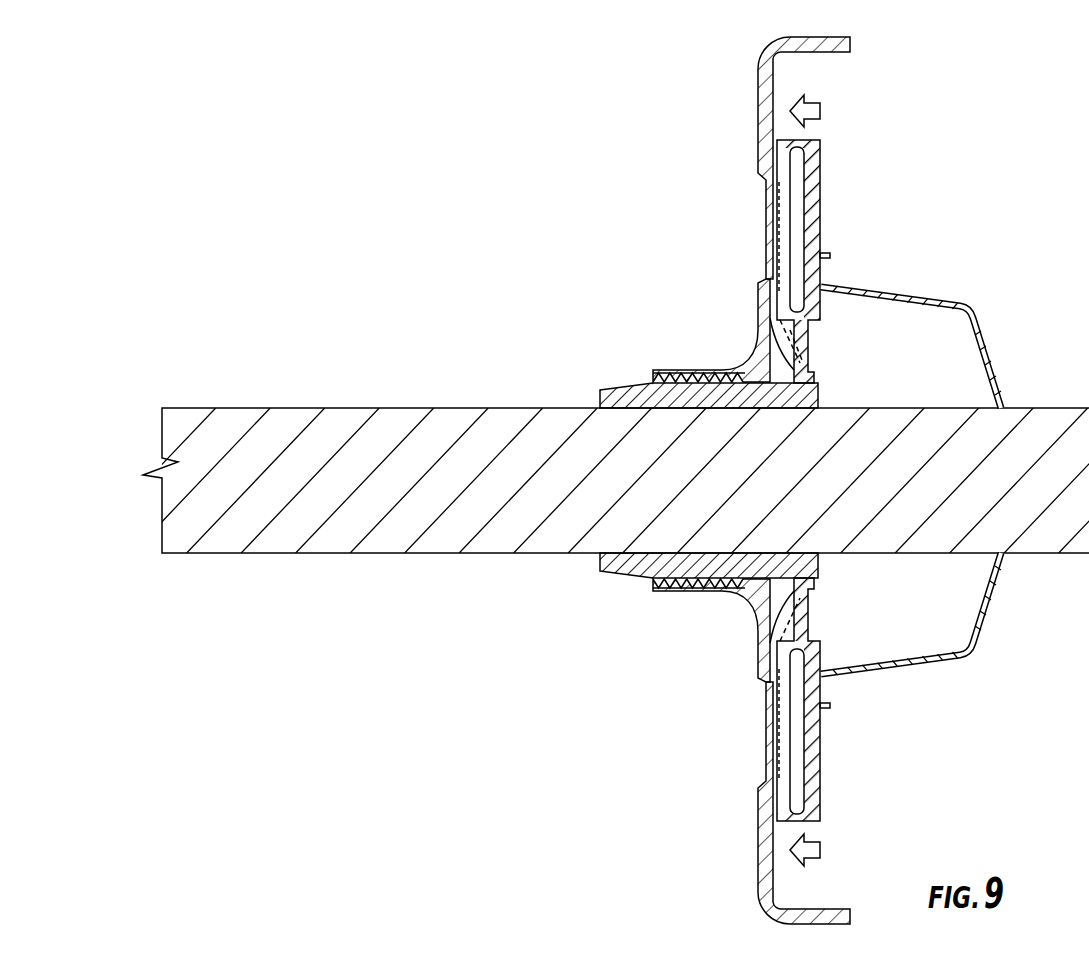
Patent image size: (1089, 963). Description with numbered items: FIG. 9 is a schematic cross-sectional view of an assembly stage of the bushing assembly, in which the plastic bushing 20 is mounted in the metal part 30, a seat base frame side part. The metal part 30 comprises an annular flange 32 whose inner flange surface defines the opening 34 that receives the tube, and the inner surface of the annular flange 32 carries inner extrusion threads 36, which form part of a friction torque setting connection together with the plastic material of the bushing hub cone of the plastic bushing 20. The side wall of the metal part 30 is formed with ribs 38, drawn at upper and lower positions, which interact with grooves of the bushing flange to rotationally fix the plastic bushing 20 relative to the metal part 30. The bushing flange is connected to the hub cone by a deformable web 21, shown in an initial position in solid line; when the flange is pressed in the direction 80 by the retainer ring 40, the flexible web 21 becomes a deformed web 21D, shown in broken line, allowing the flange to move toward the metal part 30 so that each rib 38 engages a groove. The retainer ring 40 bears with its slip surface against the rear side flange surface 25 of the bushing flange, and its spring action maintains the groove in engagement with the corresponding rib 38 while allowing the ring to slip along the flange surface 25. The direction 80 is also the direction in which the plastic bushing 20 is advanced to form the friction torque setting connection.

The plastic bushing 20 is at (800, 210).
The deformable web 21 is at (821, 722).
The deformed web 21D is at (797, 358).
The rear side flange surface 25 is at (823, 248).
The metal part 30 is at (792, 39).
The annular flange 32 is at (727, 369).
The opening 34 is at (678, 582).
The inner extrusion threads 36 is at (672, 384).
The rib 38 is at (760, 229).
The retainer ring 40 is at (925, 655).
The direction 80 is at (822, 111).